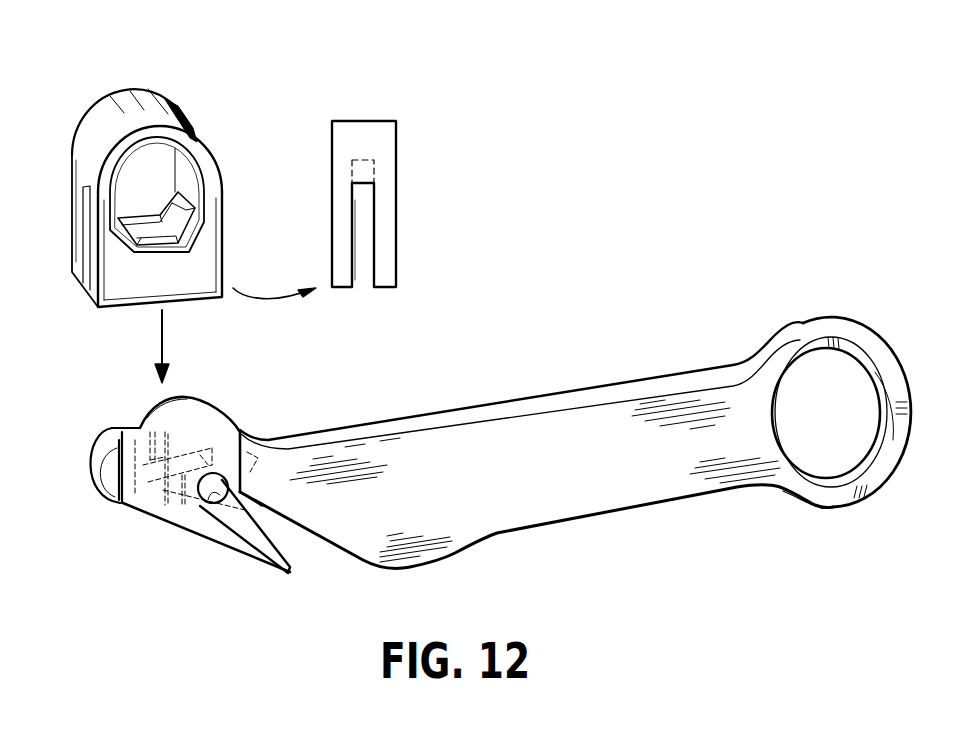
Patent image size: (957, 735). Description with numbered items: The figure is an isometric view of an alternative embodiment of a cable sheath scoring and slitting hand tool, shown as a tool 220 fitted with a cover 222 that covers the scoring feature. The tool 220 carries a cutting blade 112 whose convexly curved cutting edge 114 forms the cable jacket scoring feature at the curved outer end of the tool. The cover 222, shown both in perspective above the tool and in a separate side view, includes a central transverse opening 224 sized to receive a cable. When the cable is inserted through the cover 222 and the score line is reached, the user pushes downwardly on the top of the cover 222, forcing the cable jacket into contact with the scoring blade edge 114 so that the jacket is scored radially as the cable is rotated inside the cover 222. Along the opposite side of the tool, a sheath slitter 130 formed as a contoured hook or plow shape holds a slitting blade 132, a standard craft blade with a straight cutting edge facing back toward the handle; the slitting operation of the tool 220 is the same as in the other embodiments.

The cover 222 is at (152, 130).
The central transverse opening 224 is at (150, 192).
The cutting blade 112 is at (140, 427).
The curved cutting edge 114 is at (173, 397).
The tool 220 is at (604, 447).
The sheath slitter 130 is at (291, 570).
The slitting blade 132 is at (210, 500).